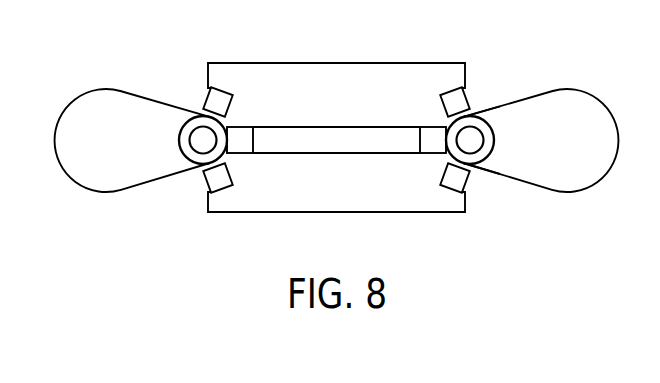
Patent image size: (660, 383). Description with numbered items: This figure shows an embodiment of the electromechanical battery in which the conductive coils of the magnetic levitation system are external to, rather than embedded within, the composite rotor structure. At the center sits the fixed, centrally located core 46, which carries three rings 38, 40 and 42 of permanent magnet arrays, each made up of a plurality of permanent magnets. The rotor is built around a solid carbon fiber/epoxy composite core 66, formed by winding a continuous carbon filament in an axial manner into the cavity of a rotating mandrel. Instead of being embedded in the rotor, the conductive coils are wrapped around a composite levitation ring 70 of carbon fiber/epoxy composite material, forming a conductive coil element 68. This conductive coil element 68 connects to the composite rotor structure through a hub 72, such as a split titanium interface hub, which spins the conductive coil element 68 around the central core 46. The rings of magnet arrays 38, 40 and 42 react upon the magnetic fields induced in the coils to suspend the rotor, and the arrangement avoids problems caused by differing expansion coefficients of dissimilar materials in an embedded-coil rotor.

The ring of permanent magnet array 38 is at (214, 97).
The ring of permanent magnet array 40 is at (426, 136).
The ring of permanent magnet array 42 is at (215, 182).
The core 46 is at (379, 212).
The solid carbon fiber/epoxy composite core 66 is at (108, 102).
The conductive coil element 68 is at (475, 164).
The composite levitation ring 70 is at (472, 132).
The hub 72 is at (496, 110).